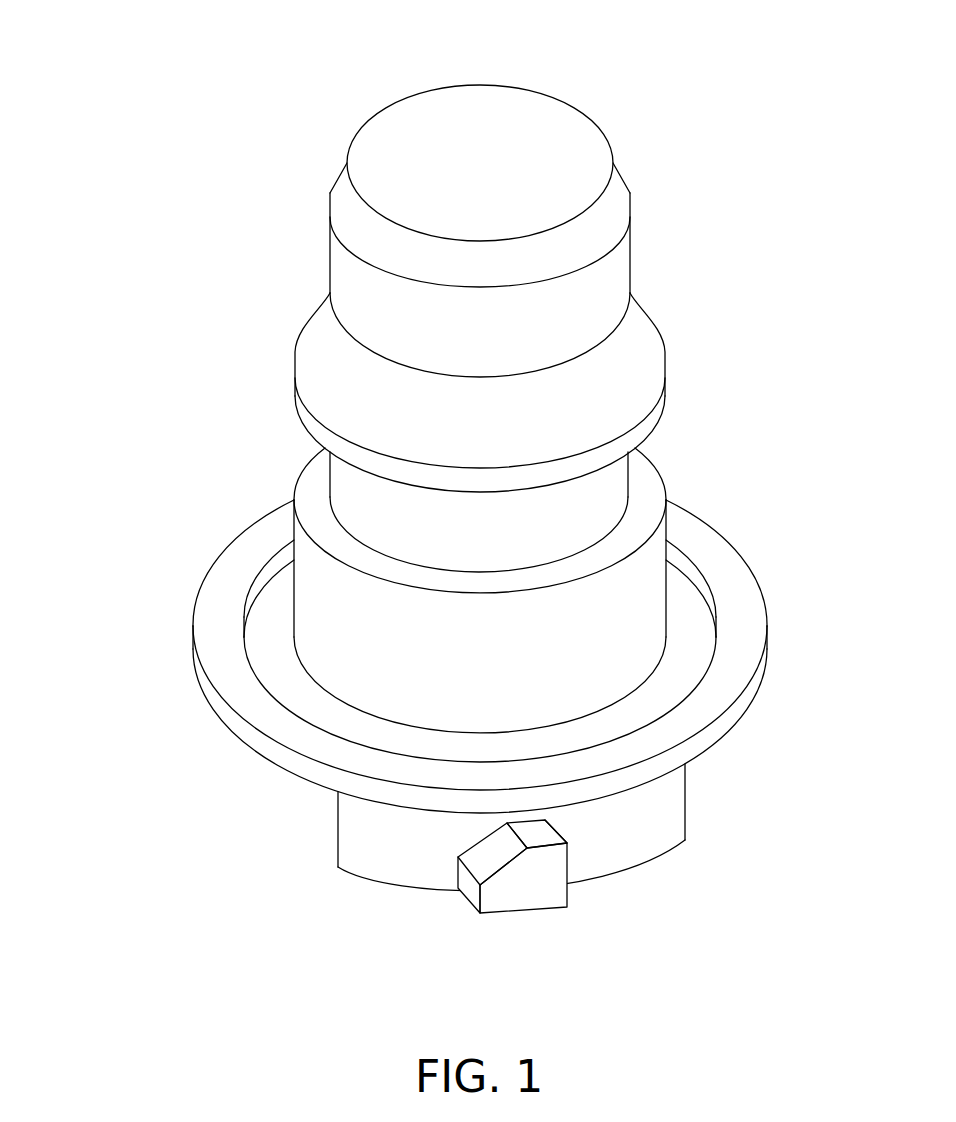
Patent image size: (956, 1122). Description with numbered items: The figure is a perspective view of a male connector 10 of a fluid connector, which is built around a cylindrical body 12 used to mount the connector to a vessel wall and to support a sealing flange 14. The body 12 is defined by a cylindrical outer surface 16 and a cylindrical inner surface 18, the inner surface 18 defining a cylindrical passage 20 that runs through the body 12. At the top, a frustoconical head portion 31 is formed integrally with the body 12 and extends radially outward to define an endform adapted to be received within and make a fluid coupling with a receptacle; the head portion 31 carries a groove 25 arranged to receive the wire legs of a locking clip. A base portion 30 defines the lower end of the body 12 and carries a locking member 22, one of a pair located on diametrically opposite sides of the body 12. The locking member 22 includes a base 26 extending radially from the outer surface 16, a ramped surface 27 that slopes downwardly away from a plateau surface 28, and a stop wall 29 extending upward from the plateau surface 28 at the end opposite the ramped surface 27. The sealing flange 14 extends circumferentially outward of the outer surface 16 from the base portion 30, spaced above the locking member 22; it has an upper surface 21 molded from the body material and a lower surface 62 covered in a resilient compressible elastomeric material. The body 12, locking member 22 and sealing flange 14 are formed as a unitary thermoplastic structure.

The male connector 10 is at (178, 154).
The cylindrical body 12 is at (668, 568).
The sealing flange 14 is at (242, 536).
The cylindrical outer surface 16 is at (625, 615).
The cylindrical inner surface 18 is at (512, 100).
The cylindrical passage 20 is at (470, 158).
The upper surface 21 is at (230, 650).
The locking member 22 is at (535, 885).
The groove 25 is at (326, 450).
The base 26 is at (503, 913).
The ramped surface 27 is at (490, 857).
The plateau surface 28 is at (540, 832).
The stop wall 29 is at (575, 822).
The base portion 30 is at (300, 823).
The frustoconical head portion 31 is at (656, 220).
The lower surface 62 is at (215, 709).